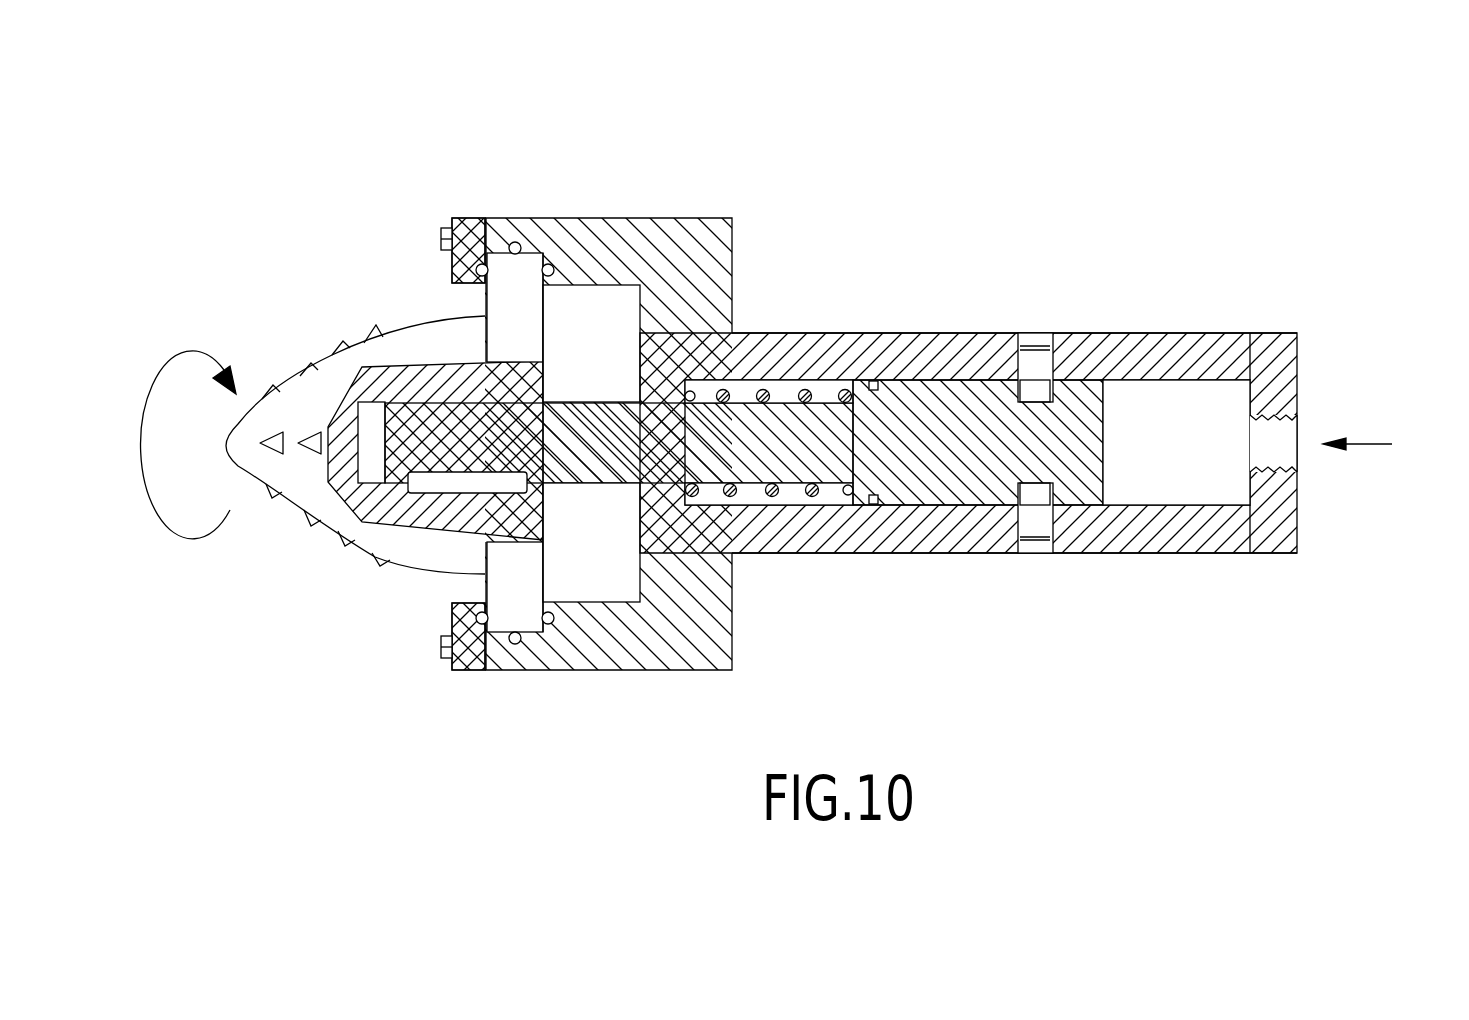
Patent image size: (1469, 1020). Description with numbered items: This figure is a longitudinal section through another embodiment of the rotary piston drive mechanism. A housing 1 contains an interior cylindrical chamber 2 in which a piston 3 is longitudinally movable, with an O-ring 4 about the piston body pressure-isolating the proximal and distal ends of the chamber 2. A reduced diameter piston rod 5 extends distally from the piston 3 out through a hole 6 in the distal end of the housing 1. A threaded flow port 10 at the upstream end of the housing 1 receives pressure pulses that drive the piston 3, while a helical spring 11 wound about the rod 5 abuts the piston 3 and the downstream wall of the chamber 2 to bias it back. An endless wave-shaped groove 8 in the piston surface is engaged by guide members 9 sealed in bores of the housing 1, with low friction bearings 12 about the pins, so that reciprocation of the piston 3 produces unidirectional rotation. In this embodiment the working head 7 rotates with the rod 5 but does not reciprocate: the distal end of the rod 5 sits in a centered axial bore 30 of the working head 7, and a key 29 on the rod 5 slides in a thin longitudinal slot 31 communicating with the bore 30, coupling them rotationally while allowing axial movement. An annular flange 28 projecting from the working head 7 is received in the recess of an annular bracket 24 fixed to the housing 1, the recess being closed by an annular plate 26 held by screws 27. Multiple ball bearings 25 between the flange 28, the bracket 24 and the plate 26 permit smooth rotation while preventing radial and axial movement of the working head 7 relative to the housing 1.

The housing 1 is at (1175, 353).
The interior cylindrical chamber 2 is at (1207, 400).
The piston 3 is at (923, 410).
The O-ring 4 is at (878, 383).
The piston rod 5 is at (450, 428).
The hole 6 is at (632, 400).
The working head 7 is at (320, 383).
The wave-shaped groove 8 is at (1025, 495).
The guide members 9 is at (1022, 483).
The flow port 10 is at (1280, 437).
The helical spring 11 is at (712, 390).
The low friction bearings 12 is at (1052, 377).
The bracket 24 is at (607, 645).
The ball bearings 25 is at (547, 625).
The annular plate 26 is at (450, 655).
The screws 27 is at (440, 650).
The annular flange 28 is at (518, 280).
The key 29 is at (452, 482).
The axial bore 30 is at (370, 455).
The slot 31 is at (545, 490).